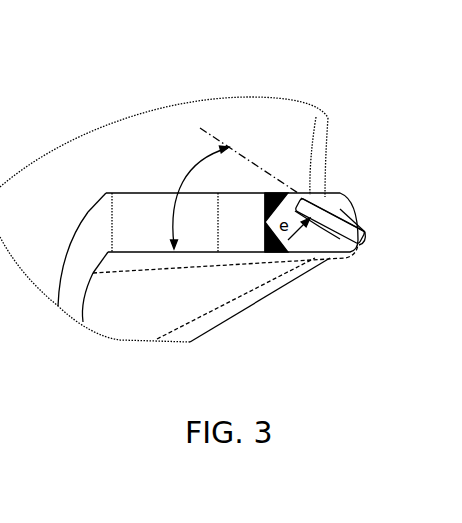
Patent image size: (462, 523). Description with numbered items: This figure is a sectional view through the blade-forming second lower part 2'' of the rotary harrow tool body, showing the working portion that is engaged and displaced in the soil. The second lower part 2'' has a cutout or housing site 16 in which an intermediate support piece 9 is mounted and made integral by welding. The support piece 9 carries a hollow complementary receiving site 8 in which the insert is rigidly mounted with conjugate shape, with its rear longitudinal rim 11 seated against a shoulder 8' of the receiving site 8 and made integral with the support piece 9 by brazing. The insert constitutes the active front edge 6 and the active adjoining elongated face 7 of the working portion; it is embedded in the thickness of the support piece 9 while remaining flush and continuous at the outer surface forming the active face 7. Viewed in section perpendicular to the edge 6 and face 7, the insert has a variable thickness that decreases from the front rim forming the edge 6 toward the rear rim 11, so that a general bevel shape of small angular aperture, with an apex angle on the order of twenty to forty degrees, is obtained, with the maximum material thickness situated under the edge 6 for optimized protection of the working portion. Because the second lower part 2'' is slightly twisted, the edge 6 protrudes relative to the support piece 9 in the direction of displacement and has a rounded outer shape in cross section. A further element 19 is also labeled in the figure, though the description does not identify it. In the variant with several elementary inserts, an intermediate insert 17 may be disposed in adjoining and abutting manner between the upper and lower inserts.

The second lower part 2'' is at (179, 203).
The recess 19 is at (272, 193).
The housing site 16 is at (262, 224).
The active front edge 6 is at (359, 225).
The rear longitudinal rim 11 is at (376, 240).
The shoulder 8' is at (350, 174).
The active adjoining elongated face 7 is at (354, 207).
The intermediate insert 17 is at (357, 233).
The receiving site 8 is at (331, 271).
The intermediate support piece 9 is at (310, 223).